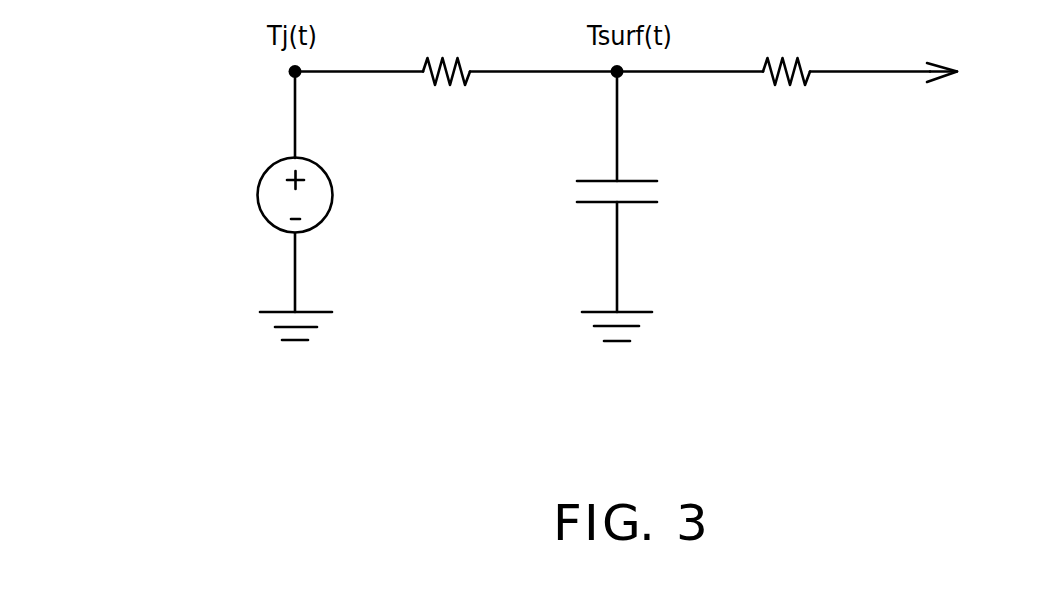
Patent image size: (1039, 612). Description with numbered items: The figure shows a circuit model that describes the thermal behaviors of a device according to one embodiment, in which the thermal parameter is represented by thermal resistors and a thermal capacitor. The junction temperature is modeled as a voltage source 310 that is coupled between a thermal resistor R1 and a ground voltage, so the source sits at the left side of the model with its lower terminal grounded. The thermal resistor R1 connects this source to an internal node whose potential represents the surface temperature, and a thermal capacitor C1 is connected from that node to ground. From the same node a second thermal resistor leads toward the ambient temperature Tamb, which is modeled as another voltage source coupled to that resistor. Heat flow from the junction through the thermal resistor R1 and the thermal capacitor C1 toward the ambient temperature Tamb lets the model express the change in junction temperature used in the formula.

The voltage source 310 is at (258, 197).
The thermal resistor R1 is at (616, 92).
The thermal capacitor C1 is at (637, 197).
The ambient temperature Tamb is at (981, 72).